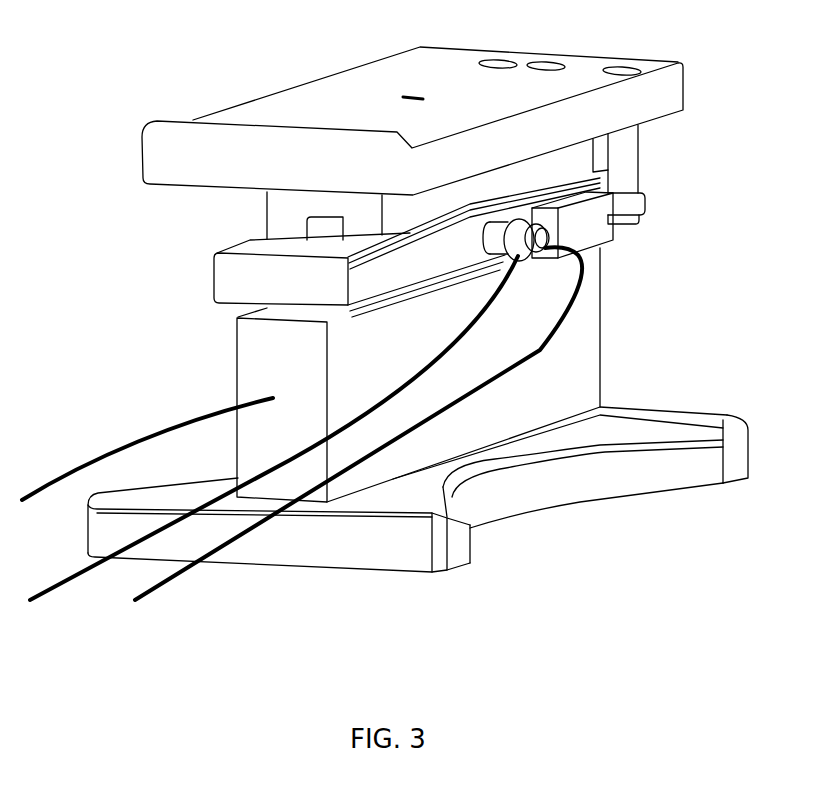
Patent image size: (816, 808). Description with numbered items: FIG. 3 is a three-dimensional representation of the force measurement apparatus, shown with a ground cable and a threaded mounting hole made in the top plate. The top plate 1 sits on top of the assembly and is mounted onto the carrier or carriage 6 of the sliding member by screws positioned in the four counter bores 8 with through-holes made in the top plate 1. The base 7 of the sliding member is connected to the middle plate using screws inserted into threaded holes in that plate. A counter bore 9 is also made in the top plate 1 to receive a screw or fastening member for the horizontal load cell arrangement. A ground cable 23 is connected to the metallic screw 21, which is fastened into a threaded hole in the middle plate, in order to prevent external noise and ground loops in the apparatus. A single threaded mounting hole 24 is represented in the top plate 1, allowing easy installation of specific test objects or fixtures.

The top plate 1 is at (675, 80).
The threaded mounting hole 24 is at (398, 92).
The carrier or carriage 6 is at (280, 202).
The base of the sliding member 7 is at (322, 230).
The screw 21 is at (530, 252).
The ground cable 23 is at (465, 333).
The counter bore 9 is at (133, 438).
The counter bores 8 is at (163, 587).